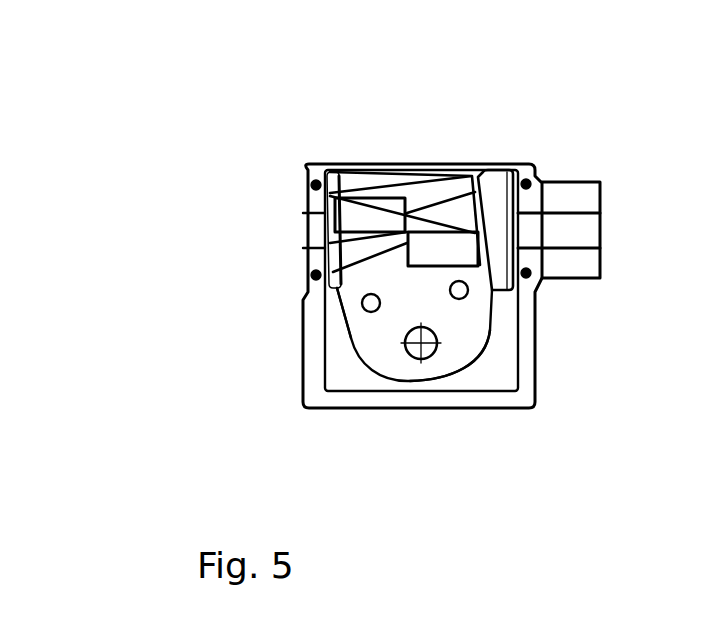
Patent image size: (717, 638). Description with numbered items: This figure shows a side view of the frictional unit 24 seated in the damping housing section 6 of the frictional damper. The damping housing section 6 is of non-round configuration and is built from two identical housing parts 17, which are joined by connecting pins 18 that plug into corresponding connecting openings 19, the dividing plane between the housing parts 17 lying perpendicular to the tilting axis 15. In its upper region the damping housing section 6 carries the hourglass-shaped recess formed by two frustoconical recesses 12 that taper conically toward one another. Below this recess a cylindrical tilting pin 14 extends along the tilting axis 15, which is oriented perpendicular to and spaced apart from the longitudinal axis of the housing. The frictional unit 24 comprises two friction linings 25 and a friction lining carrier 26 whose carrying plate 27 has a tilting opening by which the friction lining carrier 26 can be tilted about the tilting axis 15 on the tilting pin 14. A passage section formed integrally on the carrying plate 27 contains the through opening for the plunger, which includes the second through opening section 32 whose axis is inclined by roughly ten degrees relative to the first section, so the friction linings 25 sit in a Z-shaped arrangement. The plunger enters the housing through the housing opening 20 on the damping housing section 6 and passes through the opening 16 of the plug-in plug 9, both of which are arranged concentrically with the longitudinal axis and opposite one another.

The damping housing section 6 is at (412, 168).
The plug-in plug 9 is at (592, 197).
The frustoconical recess 12 is at (498, 180).
The tilting pin 14 is at (433, 357).
The tilting axis 15 is at (415, 346).
The opening 16 is at (592, 222).
The housing part 17 is at (398, 172).
The connecting pin 18 is at (316, 185).
The connecting opening 19 is at (316, 275).
The housing opening 20 is at (318, 225).
The frictional unit 24 is at (464, 375).
The friction lining 25 is at (418, 240).
The friction lining carrier 26 is at (356, 353).
The carrying plate 27 is at (350, 335).
The second through opening section 32 is at (478, 190).